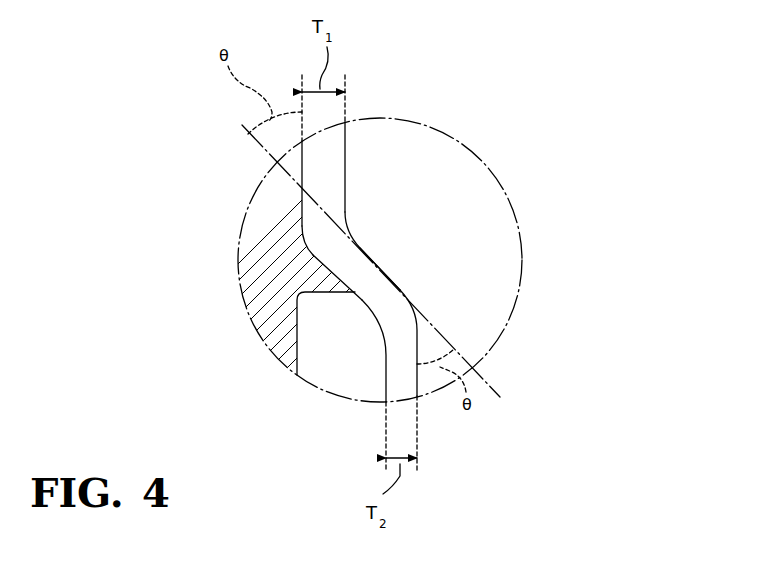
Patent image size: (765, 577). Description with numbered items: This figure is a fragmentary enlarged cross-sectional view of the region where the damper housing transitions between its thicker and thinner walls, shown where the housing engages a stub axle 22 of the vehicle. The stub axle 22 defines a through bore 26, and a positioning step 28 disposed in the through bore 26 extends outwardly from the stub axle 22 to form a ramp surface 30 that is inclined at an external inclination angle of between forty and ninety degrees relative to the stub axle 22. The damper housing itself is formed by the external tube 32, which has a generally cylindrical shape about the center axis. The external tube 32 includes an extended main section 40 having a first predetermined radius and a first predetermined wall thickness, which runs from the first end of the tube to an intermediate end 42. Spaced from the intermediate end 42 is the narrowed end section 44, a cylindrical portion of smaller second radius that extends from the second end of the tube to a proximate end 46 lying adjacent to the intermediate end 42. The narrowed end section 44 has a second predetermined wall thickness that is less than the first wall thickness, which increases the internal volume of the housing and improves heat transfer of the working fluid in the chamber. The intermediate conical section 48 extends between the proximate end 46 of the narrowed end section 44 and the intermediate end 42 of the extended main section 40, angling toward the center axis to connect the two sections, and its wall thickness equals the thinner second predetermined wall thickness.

The stub axle 22 is at (250, 203).
The through bore 26 is at (296, 339).
The positioning step 28 is at (313, 273).
The ramp surface 30 is at (320, 246).
The external tube 32 is at (349, 127).
The extended main section 40 is at (328, 178).
The intermediate end 42 is at (323, 218).
The narrowed end section 44 is at (398, 377).
The proximate end 46 is at (423, 326).
The intermediate conical section 48 is at (370, 272).